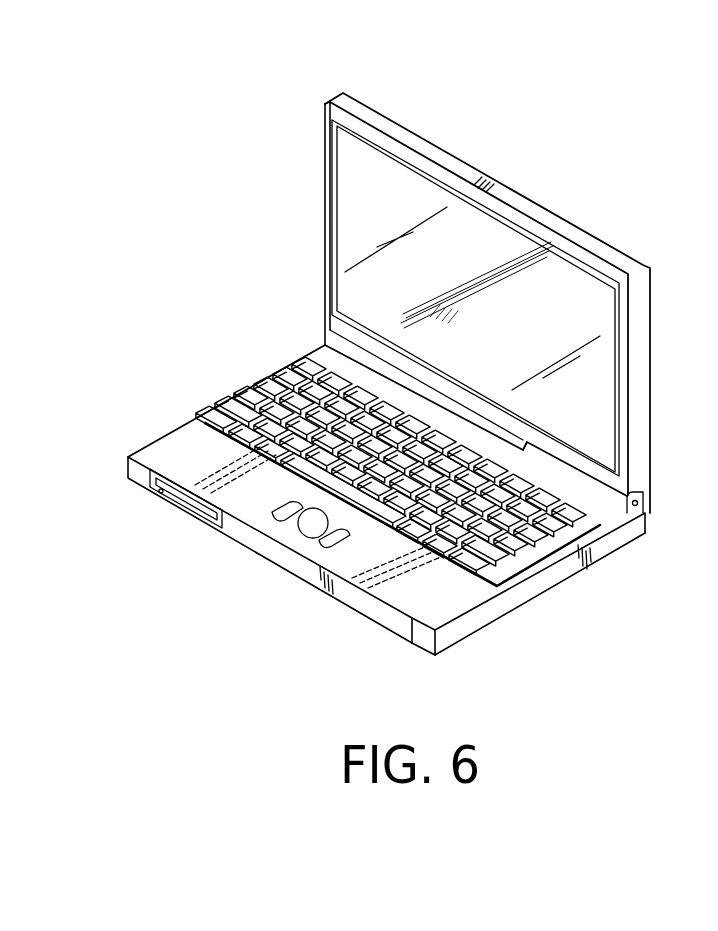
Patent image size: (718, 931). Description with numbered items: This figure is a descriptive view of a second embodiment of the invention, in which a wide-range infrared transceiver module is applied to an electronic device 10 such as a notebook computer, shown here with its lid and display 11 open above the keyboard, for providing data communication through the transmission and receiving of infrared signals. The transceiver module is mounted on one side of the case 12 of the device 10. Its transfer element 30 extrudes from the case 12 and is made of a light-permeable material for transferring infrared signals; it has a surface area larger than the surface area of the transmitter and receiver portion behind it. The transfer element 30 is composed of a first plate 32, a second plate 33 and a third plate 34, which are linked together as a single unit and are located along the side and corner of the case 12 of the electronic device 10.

The electronic device 10 is at (518, 160).
The display screen 11 is at (343, 208).
The case 12 is at (403, 587).
The transfer element 30 is at (545, 603).
The first plate 32 is at (423, 640).
The second plate 33 is at (443, 643).
The third plate 34 is at (647, 521).